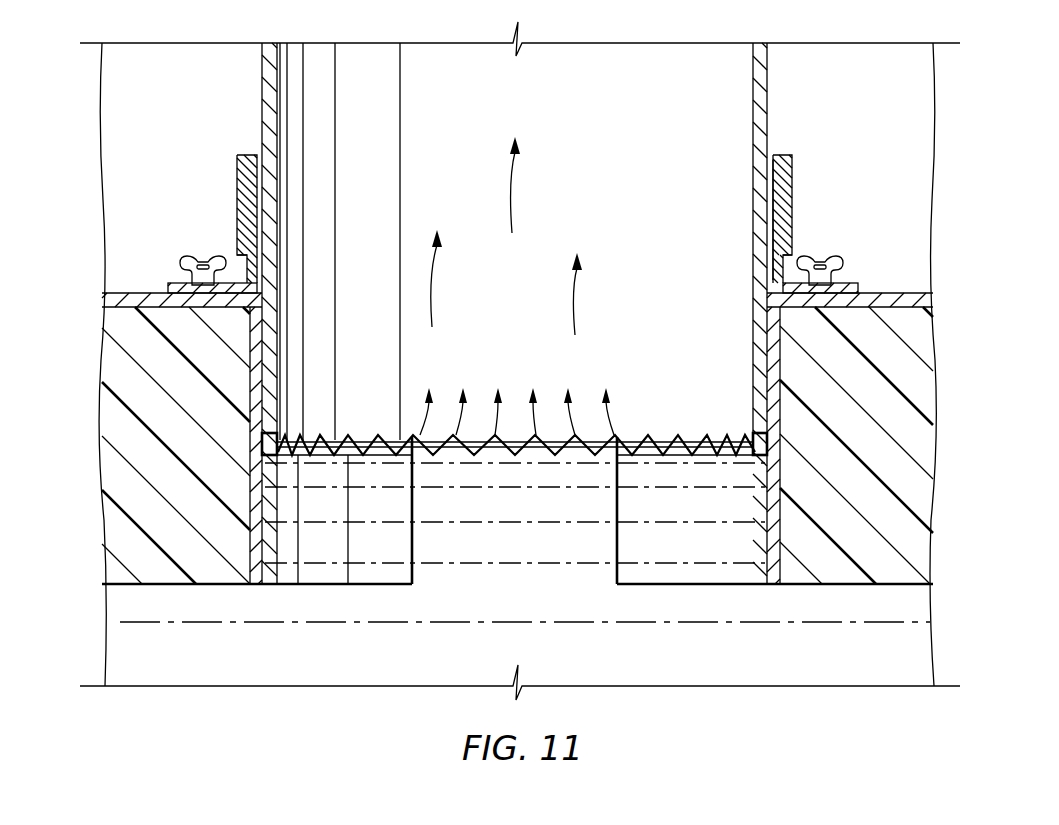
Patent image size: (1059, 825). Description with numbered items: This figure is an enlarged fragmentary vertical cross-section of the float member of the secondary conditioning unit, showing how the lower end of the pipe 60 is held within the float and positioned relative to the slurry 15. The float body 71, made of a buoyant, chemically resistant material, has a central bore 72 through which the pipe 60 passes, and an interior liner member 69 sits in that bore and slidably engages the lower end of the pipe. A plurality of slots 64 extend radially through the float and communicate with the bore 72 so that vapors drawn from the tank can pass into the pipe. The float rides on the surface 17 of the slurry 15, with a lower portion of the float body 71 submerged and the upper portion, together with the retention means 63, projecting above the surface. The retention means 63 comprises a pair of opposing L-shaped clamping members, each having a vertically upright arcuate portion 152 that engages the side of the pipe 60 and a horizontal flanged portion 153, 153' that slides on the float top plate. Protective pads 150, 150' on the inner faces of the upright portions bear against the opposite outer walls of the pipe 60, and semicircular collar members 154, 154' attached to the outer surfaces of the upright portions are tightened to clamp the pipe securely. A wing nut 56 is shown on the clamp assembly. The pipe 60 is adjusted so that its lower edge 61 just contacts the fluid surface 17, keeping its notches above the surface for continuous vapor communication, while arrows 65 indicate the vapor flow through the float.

The pipe 60 is at (768, 86).
The interior liner member 69 is at (774, 575).
The float body 71 is at (927, 500).
The central bore 72 is at (665, 572).
The slots 64 is at (508, 572).
The slurry 15 is at (736, 656).
The lower edge of pipe section 61 is at (558, 456).
The surface of the slurry 17 is at (691, 437).
The air flow arrows 65 is at (588, 300).
The protective pad 150' is at (223, 189).
The upright arcuate-shaped portion 152 is at (778, 154).
The left flange 154' is at (221, 196).
The protective pad 150 is at (805, 190).
The semicircular collar member 154 is at (810, 197).
The retention means 63 is at (798, 214).
The wing nut 56 is at (203, 262).
The horizontal flanged portion 153' is at (189, 277).
The horizontal flanged portion 153 is at (841, 275).